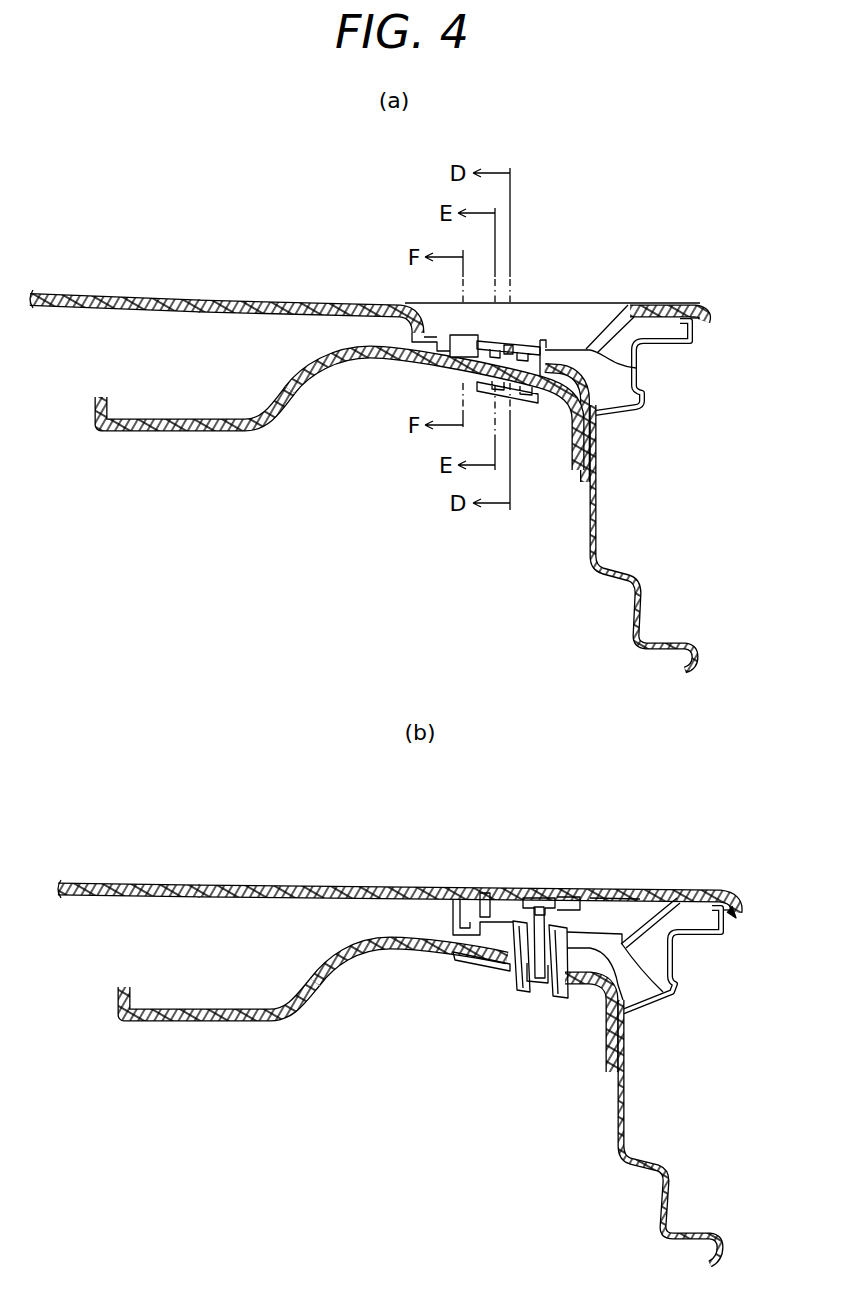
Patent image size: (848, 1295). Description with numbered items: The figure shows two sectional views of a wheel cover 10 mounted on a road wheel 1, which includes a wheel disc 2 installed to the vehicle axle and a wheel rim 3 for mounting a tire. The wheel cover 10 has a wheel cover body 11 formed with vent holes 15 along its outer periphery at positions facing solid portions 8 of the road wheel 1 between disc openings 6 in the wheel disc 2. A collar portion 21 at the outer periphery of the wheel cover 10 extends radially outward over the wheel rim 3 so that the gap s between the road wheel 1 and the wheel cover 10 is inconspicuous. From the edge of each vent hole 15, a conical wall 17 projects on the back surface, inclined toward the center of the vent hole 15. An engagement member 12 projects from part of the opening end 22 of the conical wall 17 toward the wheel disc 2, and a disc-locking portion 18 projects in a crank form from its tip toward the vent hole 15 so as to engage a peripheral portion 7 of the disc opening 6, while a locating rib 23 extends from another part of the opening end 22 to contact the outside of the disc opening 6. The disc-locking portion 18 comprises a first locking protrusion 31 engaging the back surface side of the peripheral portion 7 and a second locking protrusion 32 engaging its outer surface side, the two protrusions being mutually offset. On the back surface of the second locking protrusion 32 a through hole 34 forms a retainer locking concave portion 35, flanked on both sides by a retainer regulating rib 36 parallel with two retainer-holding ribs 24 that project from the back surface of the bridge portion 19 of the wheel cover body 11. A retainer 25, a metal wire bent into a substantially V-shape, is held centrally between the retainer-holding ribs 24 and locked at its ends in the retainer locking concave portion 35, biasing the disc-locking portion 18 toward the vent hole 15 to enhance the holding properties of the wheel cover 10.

The road wheel 1 is at (626, 553).
The wheel disc 2 is at (181, 437).
The wheel rim 3 is at (646, 397).
The disc opening 6 is at (490, 960).
The peripheral portion 7 is at (460, 953).
The solid portion 8 is at (438, 366).
The wheel cover 10 is at (219, 281).
The wheel cover body 11 is at (112, 293).
The engagement member 12 is at (542, 348).
The vent hole 15 is at (594, 305).
The conical wall 17 is at (630, 303).
The disc-locking portion 18 is at (604, 412).
The bridge portion 19 is at (612, 891).
The collar portion 21 is at (702, 307).
The opening end 22 is at (646, 360).
The locating rib 23 is at (390, 308).
The retainer-holding rib 24 is at (505, 902).
The retainer 25 is at (508, 905).
The first locking protrusion 31 is at (510, 408).
The second locking protrusion 32 is at (596, 425).
The through hole 34 is at (510, 342).
The retainer locking concave portion 35 is at (542, 993).
The retainer regulating rib 36 is at (508, 978).
The gap s is at (700, 322).